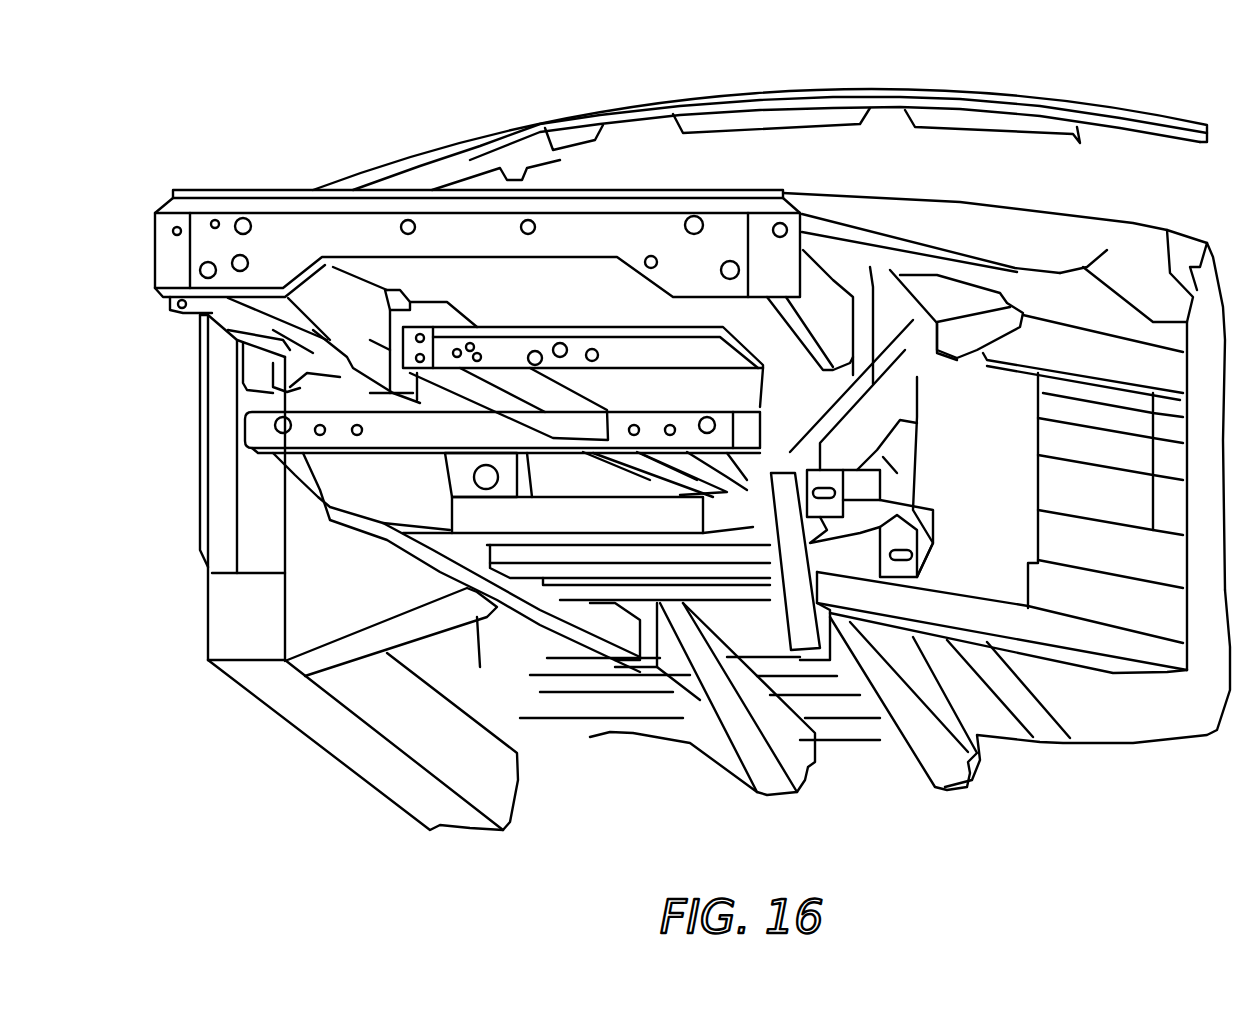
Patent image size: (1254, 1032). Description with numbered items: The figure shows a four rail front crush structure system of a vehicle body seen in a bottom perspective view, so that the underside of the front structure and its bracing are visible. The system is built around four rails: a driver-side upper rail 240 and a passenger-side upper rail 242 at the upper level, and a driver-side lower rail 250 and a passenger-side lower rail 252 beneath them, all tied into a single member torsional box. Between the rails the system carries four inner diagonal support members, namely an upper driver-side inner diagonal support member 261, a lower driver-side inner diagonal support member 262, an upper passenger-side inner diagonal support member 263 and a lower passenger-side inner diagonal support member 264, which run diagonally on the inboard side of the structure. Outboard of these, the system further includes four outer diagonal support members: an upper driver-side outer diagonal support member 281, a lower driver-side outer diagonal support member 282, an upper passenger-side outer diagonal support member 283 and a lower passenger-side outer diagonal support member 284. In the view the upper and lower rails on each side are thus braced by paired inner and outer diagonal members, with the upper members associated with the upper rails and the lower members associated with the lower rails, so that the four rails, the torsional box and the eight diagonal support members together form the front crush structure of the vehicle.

The driver-side upper rail 240 is at (820, 290).
The passenger-side upper rail 242 is at (227, 337).
The driver-side lower rail 250 is at (753, 480).
The passenger-side lower rail 252 is at (303, 472).
The upper driver-side inner diagonal support member 261 is at (745, 385).
The lower driver-side inner diagonal support member 262 is at (803, 632).
The upper passenger-side inner diagonal support member 263 is at (545, 392).
The lower passenger-side inner diagonal support member 264 is at (508, 583).
The upper driver-side outer diagonal support member 281 is at (1093, 360).
The lower driver-side outer diagonal support member 282 is at (988, 635).
The upper passenger-side outer diagonal support member 283 is at (305, 398).
The lower passenger-side outer diagonal support member 284 is at (368, 650).